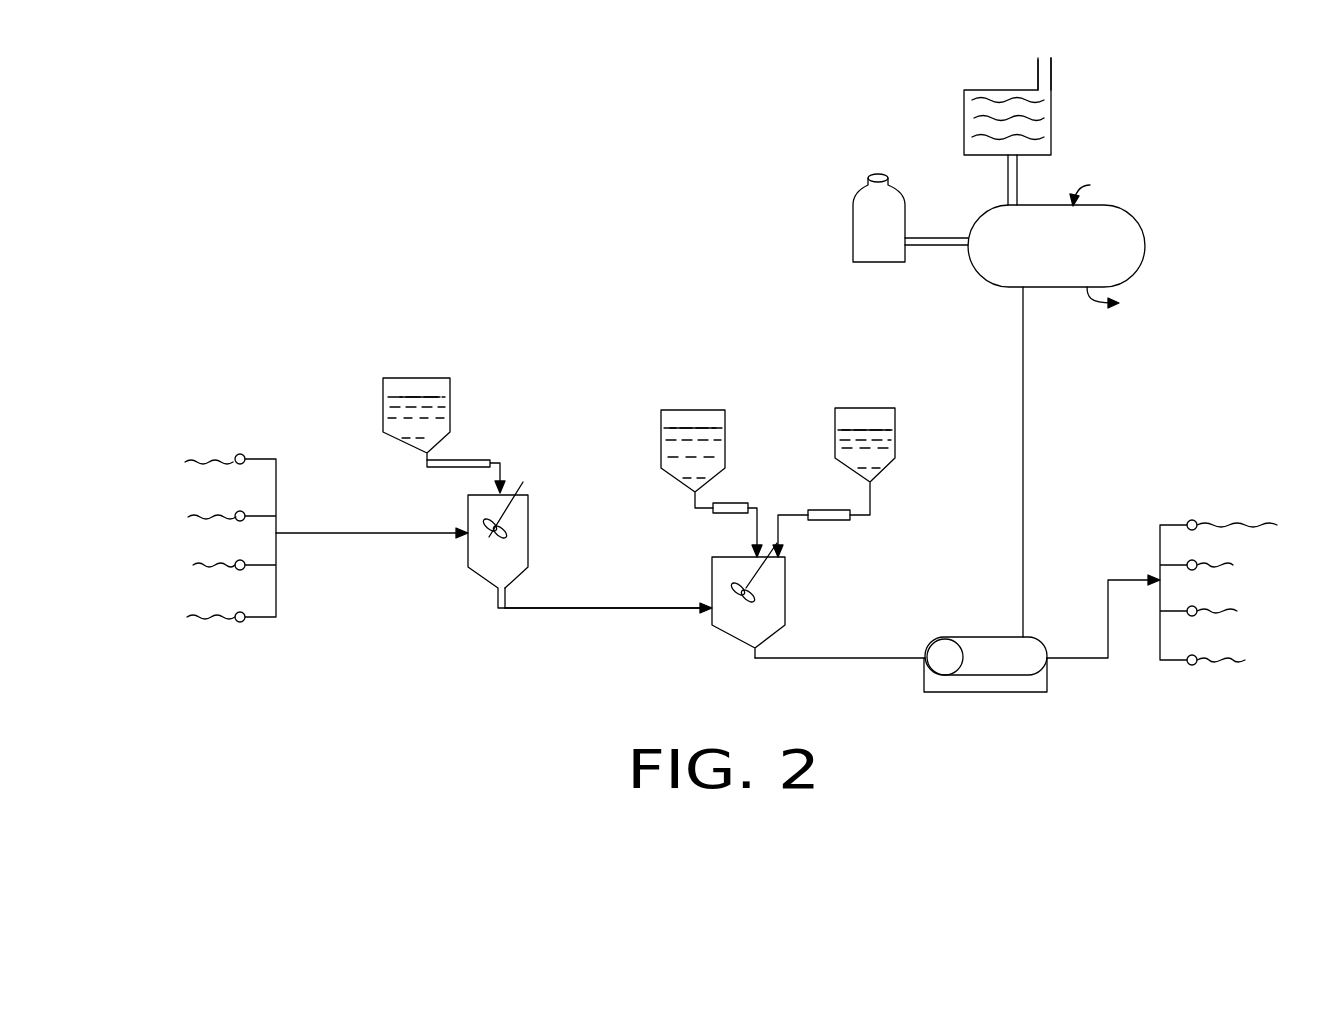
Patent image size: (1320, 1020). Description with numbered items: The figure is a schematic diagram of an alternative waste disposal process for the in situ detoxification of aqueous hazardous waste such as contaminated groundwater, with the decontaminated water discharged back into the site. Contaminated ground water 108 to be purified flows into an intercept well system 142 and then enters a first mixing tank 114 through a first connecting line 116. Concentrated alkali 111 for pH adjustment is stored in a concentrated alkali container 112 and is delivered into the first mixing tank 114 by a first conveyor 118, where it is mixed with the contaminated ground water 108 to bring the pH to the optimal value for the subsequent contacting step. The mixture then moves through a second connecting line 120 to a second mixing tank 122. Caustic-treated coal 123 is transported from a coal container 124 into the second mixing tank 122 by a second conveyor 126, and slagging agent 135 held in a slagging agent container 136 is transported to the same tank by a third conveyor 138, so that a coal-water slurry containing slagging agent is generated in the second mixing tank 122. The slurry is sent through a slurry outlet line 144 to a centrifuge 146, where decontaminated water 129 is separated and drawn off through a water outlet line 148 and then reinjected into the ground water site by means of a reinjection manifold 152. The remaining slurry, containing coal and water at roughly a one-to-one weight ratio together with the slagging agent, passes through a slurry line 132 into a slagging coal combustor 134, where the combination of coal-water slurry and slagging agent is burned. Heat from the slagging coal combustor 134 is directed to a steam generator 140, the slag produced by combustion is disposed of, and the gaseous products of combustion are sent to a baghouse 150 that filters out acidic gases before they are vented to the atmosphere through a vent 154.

The contaminated ground water 108 is at (187, 618).
The concentrated alkali 111 is at (424, 402).
The concentrated alkali container 112 is at (383, 410).
The first mixing tank 114 is at (488, 557).
The first connecting line 116 is at (365, 534).
The first conveyor 118 is at (462, 460).
The second connecting line 120 is at (597, 609).
The second mixing tank 122 is at (721, 635).
The caustic-treated coal 123 is at (695, 440).
The coal container 124 is at (661, 420).
The second conveyor 126 is at (733, 503).
The decontaminated water 129 is at (1247, 660).
The slurry line 132 is at (1023, 428).
The slagging coal combustor 134 is at (1145, 242).
The slagging agent 135 is at (868, 440).
The slagging agent container 136 is at (835, 420).
The third conveyor 138 is at (830, 515).
The steam generator 140 is at (865, 222).
The intercept well system 142 is at (268, 458).
The slurry outlet line 144 is at (835, 659).
The centrifuge 146 is at (945, 655).
The water outlet line 148 is at (1087, 659).
The baghouse 150 is at (990, 95).
The reinjection manifold 152 is at (1167, 524).
The vent 154 is at (1052, 67).